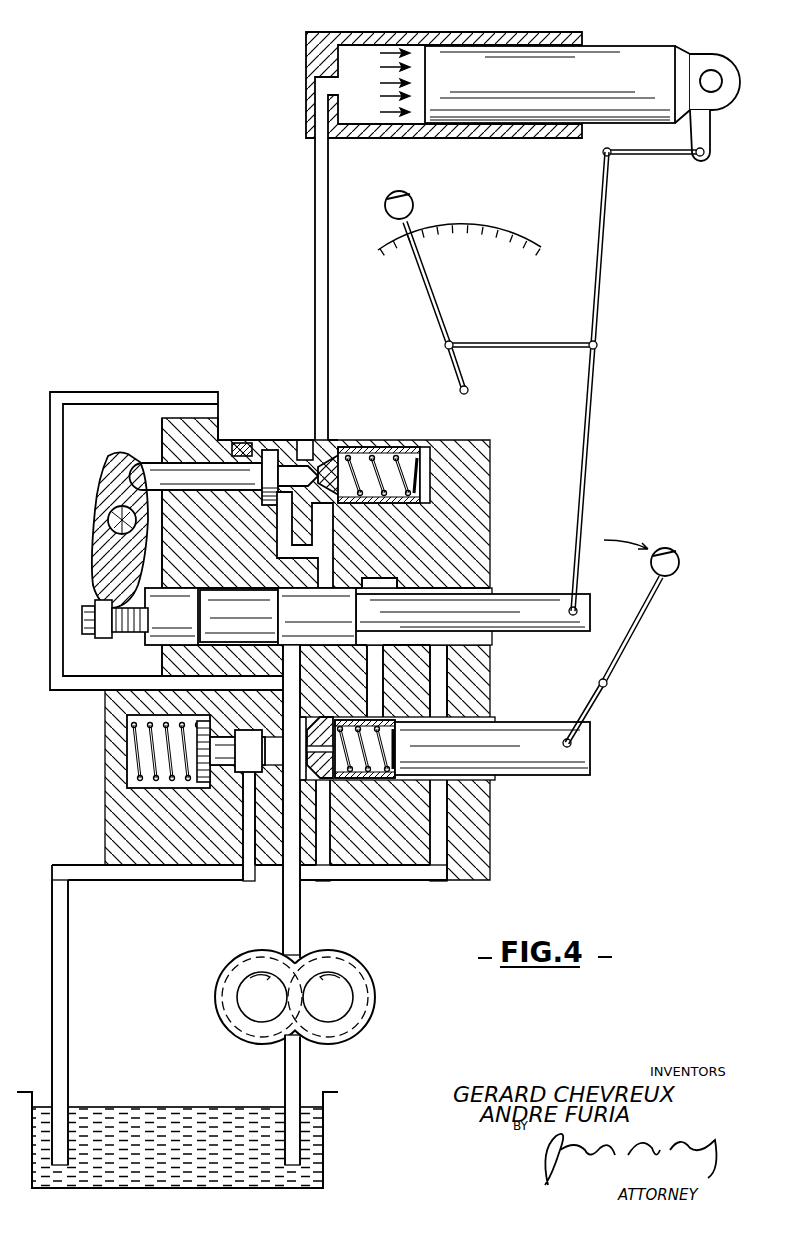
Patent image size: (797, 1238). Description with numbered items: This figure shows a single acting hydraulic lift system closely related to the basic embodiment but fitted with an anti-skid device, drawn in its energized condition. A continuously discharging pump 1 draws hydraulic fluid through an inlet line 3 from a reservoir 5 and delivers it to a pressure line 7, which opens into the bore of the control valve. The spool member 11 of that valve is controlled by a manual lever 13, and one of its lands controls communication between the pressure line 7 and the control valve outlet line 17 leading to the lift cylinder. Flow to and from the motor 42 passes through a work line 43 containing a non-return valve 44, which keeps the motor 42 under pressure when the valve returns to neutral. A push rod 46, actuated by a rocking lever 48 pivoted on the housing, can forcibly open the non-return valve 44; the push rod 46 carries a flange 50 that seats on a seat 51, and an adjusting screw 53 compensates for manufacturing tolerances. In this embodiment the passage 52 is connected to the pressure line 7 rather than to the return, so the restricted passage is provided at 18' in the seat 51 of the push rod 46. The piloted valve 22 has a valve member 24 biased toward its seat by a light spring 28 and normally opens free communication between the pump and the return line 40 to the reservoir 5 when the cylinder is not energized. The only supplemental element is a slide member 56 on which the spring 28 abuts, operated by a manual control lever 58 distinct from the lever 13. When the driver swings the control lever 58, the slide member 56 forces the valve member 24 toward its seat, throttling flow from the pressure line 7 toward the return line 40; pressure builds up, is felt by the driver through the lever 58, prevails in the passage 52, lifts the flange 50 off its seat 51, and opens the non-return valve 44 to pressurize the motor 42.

The pump 1 is at (252, 995).
The inlet line 3 is at (290, 1105).
The reservoir 5 is at (155, 1128).
The pressure line 7 is at (292, 668).
The spool member 11 is at (468, 610).
The manual lever 13 is at (418, 271).
The control valve outlet line 17 is at (310, 556).
The restricted passage 18' is at (251, 409).
The piloted valve 22 is at (357, 709).
The valve member 24 is at (348, 778).
The light spring 28 is at (380, 748).
The return line 40 is at (437, 818).
The motor 42 is at (352, 68).
The work line 43 is at (329, 232).
The non-return valve 44 is at (375, 419).
The push rod 46 is at (150, 470).
The rocking lever 48 is at (100, 490).
The flange 50 is at (285, 506).
The seat 51 is at (262, 500).
The return passage 52 is at (52, 605).
The adjusting screw 53 is at (135, 636).
The slide member 56 is at (535, 745).
The manual control lever 58 is at (607, 668).